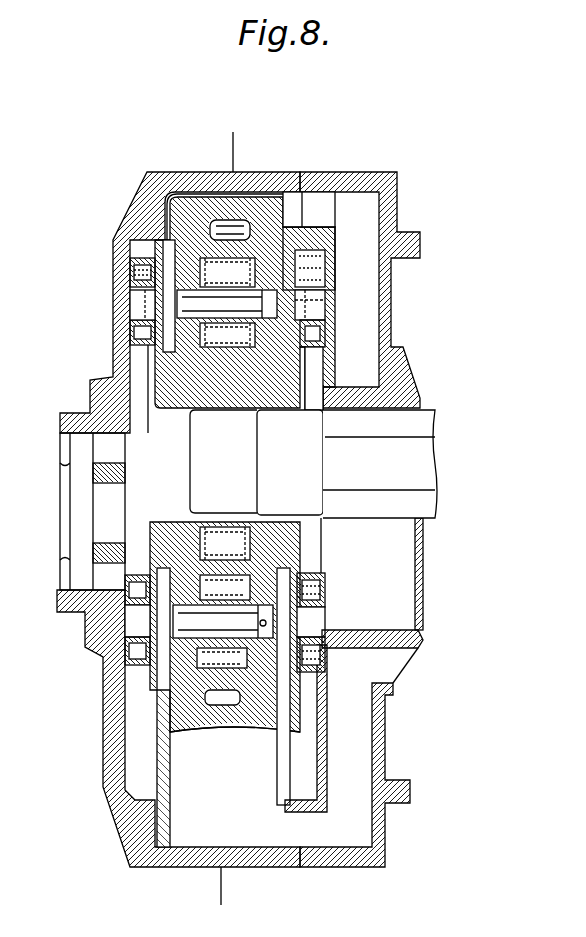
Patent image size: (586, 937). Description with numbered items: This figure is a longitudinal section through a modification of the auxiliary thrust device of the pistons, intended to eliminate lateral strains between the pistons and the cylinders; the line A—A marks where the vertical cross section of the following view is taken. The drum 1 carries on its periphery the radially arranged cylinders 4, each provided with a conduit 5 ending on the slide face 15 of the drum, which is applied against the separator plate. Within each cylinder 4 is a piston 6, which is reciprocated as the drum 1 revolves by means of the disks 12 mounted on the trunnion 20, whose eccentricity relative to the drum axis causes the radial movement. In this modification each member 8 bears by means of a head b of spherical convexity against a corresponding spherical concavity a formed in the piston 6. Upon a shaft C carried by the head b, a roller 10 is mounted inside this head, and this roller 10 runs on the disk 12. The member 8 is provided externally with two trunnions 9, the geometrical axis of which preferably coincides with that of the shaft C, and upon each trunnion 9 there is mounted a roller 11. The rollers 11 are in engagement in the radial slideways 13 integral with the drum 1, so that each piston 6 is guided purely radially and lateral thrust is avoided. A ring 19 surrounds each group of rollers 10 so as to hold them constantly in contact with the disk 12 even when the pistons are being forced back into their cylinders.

The drum 1 is at (122, 260).
The cylinder 4 is at (123, 815).
The conduit 5 is at (365, 303).
The piston 6 is at (252, 731).
The member 8 is at (185, 393).
The trunnion 9 is at (140, 305).
The roller 10 is at (293, 230).
The roller 11 is at (325, 258).
The disk 12 is at (232, 400).
The radial slideway 13 is at (140, 387).
The slide face 15 is at (342, 638).
The ring 19 is at (293, 678).
The trunnion 20 is at (212, 482).
The spherical concavity a is at (192, 187).
The head b is at (230, 238).
The section line A— A is at (237, 518).
The shaft C is at (333, 327).